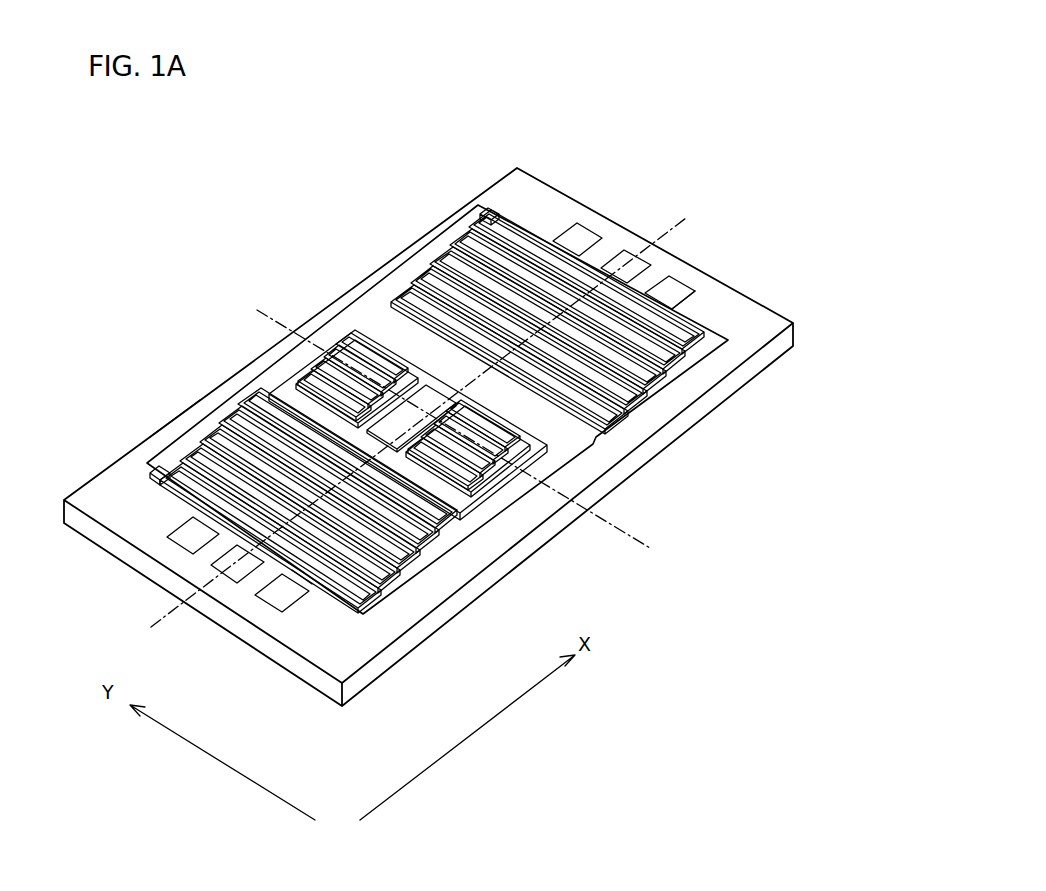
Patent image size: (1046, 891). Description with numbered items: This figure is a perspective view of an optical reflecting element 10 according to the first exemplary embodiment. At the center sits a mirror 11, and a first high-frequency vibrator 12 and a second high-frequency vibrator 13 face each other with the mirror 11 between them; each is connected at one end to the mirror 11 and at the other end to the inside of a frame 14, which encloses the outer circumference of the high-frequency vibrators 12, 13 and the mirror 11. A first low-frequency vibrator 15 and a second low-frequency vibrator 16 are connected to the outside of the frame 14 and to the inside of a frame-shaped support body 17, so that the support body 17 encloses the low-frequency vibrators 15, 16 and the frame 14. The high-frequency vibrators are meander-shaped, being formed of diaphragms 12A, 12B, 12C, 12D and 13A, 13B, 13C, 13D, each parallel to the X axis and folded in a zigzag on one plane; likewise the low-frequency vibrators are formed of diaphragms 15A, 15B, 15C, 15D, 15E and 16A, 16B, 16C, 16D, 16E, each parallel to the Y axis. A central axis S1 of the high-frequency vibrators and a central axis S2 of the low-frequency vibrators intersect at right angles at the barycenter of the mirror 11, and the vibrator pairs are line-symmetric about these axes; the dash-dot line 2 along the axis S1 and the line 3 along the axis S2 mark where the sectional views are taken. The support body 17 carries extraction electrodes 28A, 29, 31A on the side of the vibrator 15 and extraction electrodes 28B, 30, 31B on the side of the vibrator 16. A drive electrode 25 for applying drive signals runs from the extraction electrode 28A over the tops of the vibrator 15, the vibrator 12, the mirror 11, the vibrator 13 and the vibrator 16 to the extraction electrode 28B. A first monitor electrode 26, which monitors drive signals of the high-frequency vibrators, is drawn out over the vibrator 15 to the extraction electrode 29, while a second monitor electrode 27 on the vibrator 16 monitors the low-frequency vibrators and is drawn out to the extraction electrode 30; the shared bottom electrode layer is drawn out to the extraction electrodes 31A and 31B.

The optical reflecting element 10 is at (710, 180).
The line 2- 2 is at (437, 409).
The line 3- 3 is at (426, 407).
The mirror 11 is at (437, 400).
The first high-frequency vibrator 12 is at (295, 309).
The diaphragm 12A is at (390, 350).
The diaphragm 12B is at (370, 357).
The diaphragm 12C is at (360, 370).
The diaphragm 12D is at (345, 378).
The second high-frequency vibrator 13 is at (554, 500).
The diaphragm 13A is at (476, 482).
The diaphragm 13B is at (490, 468).
The diaphragm 13C is at (503, 456).
The diaphragm 13D is at (515, 443).
The frame 14 is at (293, 382).
The first low-frequency vibrator 15 is at (338, 534).
The diaphragm 15A is at (450, 520).
The diaphragm 15B is at (430, 540).
The diaphragm 15C is at (410, 560).
The diaphragm 15D is at (390, 580).
The diaphragm 15E is at (370, 600).
The second low-frequency vibrator 16 is at (607, 299).
The diaphragm 16A is at (612, 422).
The diaphragm 16B is at (632, 402).
The diaphragm 16C is at (652, 383).
The diaphragm 16D is at (670, 362).
The diaphragm 16E is at (690, 340).
The support body 17 is at (178, 425).
The drive electrode 25 is at (495, 212).
The first monitor electrode 26 is at (303, 573).
The second monitor electrode 27 is at (675, 305).
The extraction electrode 28A is at (215, 572).
The extraction electrode 28B is at (622, 260).
The extraction electrode 29 is at (275, 600).
The extraction electrode 30 is at (680, 283).
The extraction electrode 31A is at (180, 537).
The extraction electrode 31B is at (585, 232).
The central axis S1 is at (645, 533).
The central axis S2 is at (672, 220).